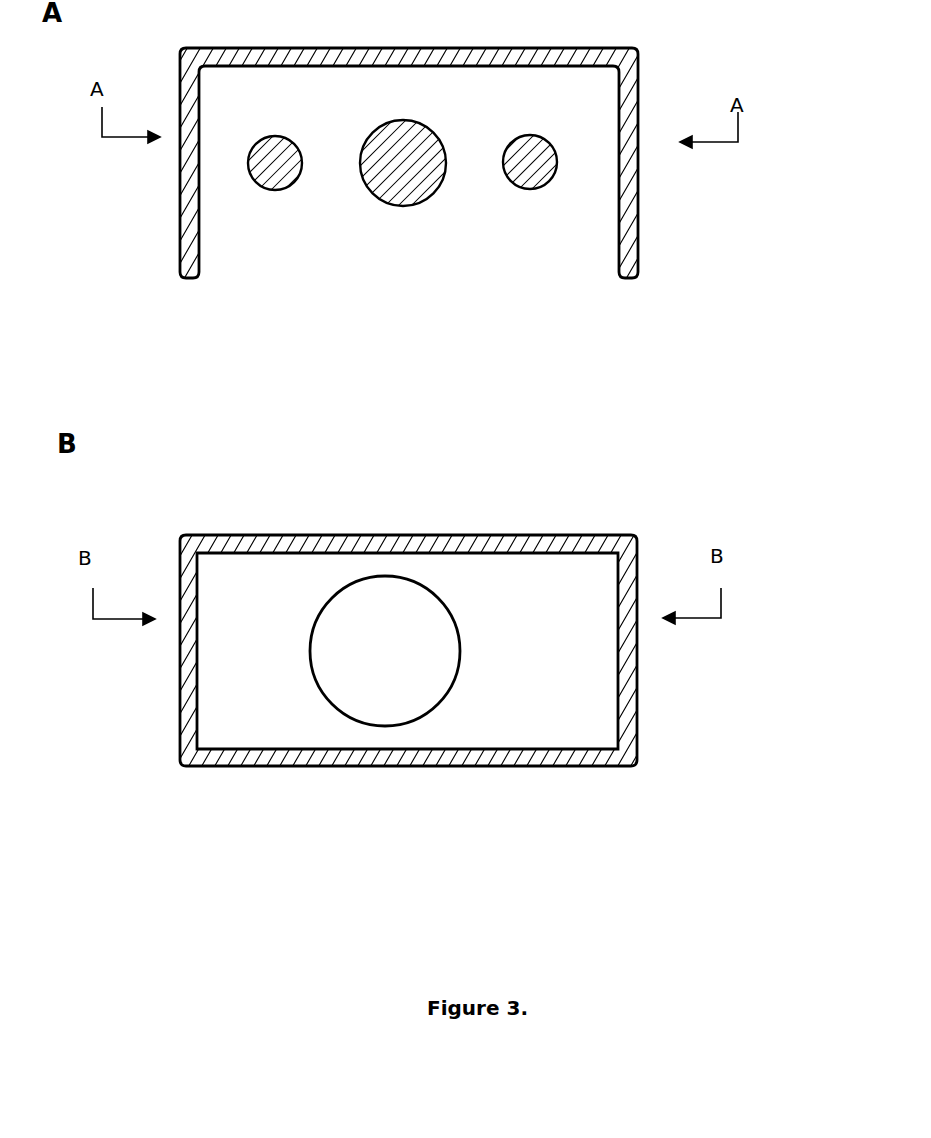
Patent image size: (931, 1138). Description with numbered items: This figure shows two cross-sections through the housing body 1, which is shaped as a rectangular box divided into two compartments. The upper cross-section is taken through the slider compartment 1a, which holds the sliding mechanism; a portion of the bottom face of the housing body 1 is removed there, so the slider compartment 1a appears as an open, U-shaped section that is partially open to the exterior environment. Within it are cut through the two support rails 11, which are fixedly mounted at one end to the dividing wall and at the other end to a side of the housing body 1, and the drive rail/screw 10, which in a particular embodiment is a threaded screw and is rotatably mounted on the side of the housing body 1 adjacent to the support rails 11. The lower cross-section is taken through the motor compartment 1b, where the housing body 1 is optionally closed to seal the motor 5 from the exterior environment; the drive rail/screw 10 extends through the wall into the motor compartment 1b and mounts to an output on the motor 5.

The housing body 1 is at (160, 262).
The slider compartment 1a is at (662, 227).
The motor compartment 1b is at (290, 780).
The motor 5 is at (387, 702).
The drive rail/screw 10 is at (412, 187).
The support rail 11 is at (288, 187).